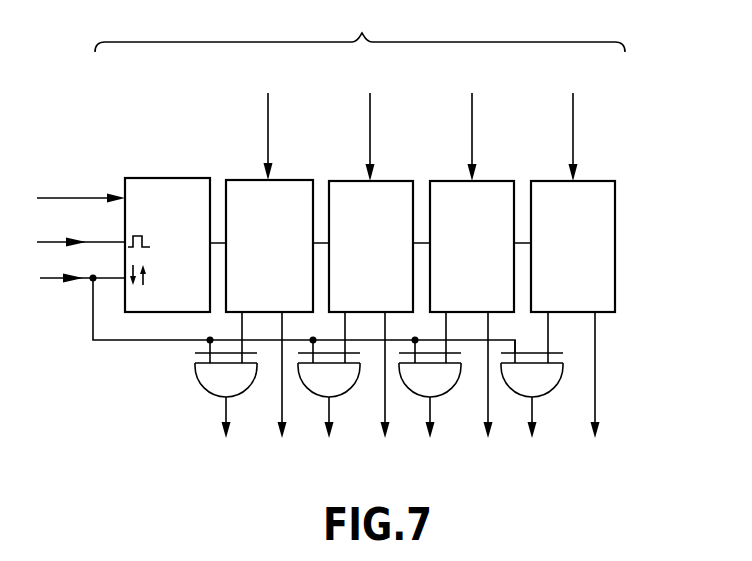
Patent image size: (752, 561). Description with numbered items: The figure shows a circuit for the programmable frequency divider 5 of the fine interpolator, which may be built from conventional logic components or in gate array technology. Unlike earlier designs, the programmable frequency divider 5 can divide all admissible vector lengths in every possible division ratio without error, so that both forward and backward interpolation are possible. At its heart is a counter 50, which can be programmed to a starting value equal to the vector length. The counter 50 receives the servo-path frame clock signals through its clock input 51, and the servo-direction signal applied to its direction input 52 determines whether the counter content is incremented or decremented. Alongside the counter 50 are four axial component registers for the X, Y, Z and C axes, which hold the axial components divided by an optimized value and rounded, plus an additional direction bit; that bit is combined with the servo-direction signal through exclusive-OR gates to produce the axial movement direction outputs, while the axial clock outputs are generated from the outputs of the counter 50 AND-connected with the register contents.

The programmable frequency divider 5 is at (331, 238).
The counter 50 is at (157, 179).
The clock input 51 is at (81, 234).
The direction input 52 is at (277, 306).